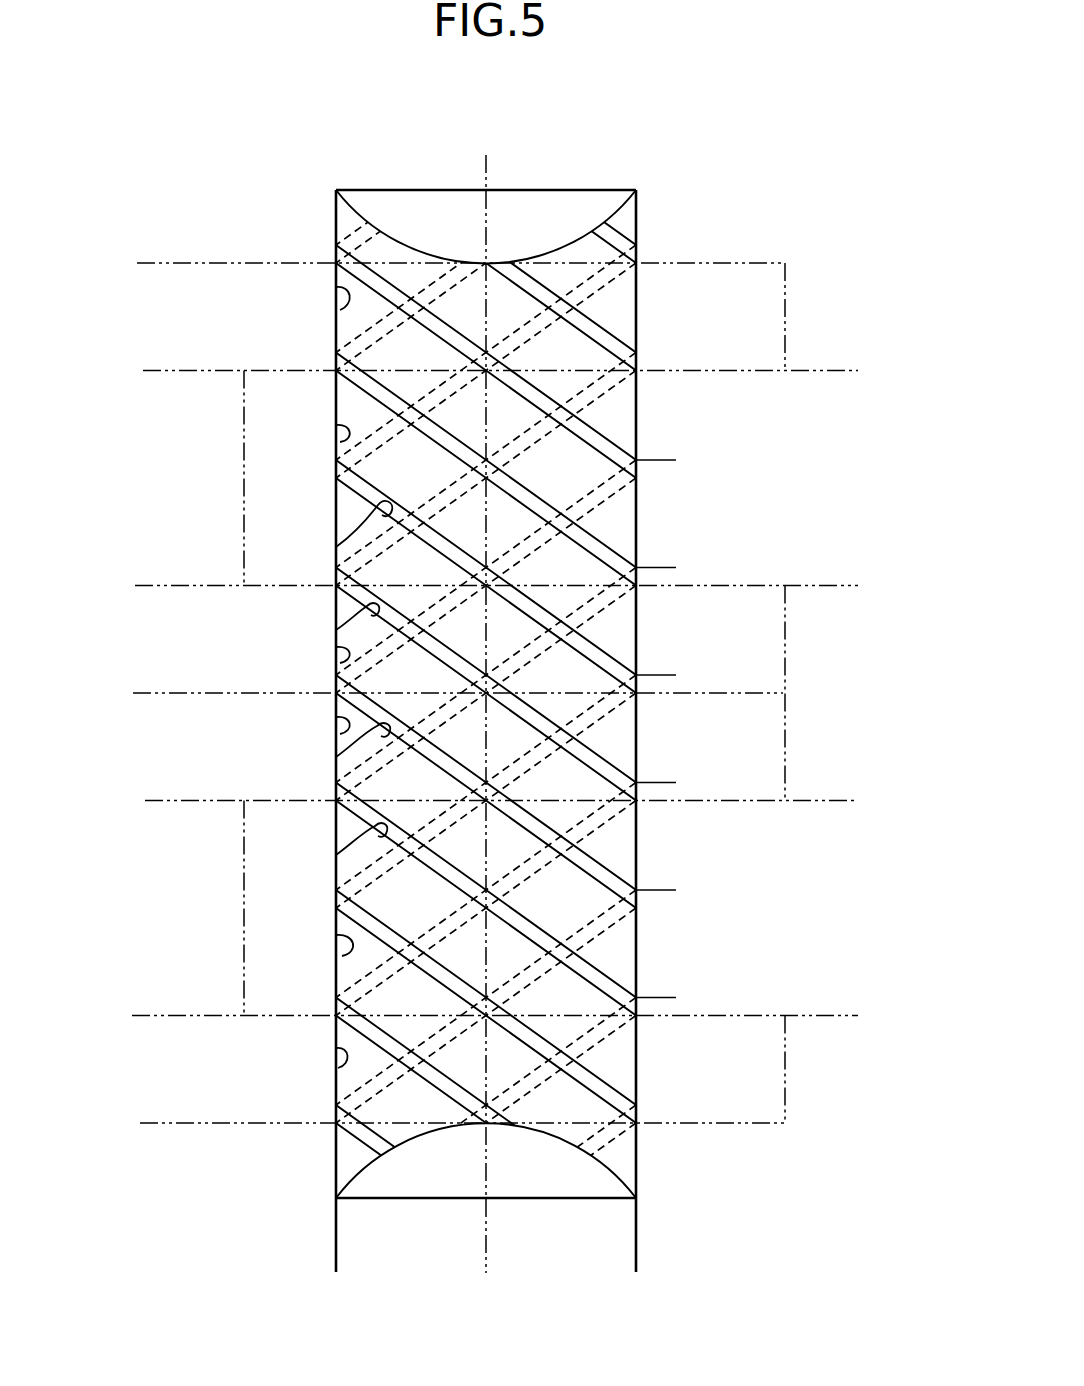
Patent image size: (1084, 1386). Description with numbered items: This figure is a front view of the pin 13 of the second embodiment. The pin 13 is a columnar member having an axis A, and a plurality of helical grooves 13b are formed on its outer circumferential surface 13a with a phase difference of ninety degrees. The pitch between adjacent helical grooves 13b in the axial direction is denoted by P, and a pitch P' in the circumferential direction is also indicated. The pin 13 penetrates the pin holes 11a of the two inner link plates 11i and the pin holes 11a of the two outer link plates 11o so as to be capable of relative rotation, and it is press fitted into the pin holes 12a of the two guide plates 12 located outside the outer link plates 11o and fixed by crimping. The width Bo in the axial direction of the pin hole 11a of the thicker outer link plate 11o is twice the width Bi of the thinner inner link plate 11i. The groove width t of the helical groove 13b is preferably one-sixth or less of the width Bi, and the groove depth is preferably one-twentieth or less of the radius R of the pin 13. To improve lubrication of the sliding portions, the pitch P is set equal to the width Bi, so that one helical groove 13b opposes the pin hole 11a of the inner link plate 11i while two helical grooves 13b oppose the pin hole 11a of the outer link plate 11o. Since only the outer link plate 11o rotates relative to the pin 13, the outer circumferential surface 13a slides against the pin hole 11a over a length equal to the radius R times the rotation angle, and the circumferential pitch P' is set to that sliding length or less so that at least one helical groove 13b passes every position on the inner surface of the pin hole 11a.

The pin 13 is at (655, 233).
The outer circumferential surface 13a is at (582, 482).
The helical groove 13b is at (336, 547).
The guide plate 12 is at (730, 260).
The pin hole 12a is at (336, 317).
The outer link plate 11o is at (808, 366).
The inner link plate 11i is at (190, 581).
The pin hole 11a is at (336, 440).
The axis A is at (488, 207).
The pitch P is at (656, 675).
The pitch in the circumferential direction P' is at (511, 696).
The width in the axial direction of the pin hole of the outer link plate Bo is at (712, 370).
The width in the axial direction of the inner link plate Bi is at (712, 586).
The groove width t is at (663, 1047).
The radius R is at (486, 1250).